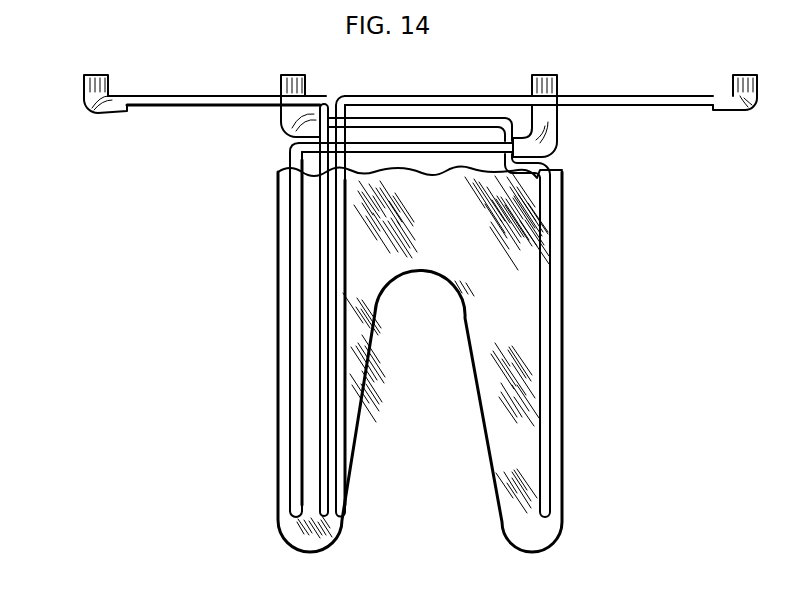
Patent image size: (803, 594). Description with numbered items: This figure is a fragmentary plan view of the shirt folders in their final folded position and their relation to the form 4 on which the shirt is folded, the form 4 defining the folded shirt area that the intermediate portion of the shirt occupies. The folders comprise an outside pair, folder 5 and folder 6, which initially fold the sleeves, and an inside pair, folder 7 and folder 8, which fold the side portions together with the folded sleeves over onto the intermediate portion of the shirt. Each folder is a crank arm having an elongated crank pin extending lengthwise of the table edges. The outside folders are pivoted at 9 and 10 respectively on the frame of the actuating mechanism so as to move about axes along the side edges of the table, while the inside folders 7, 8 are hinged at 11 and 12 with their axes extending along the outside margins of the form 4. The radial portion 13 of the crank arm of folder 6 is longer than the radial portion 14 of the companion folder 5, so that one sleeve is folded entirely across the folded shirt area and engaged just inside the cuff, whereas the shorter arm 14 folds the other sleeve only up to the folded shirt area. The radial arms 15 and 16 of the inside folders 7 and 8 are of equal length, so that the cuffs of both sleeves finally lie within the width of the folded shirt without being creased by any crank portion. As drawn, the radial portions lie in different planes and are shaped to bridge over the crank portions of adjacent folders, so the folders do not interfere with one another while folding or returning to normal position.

The form 4 is at (482, 350).
The outside folder 5 is at (322, 508).
The outside folder 6 is at (341, 458).
The inside folder 7 is at (545, 492).
The inside folder 8 is at (295, 465).
The pivot of outside folder 9 is at (92, 85).
The pivot of outside folder 10 is at (757, 90).
The pivot of inside folder 11 is at (300, 84).
The pivot of inside folder 12 is at (548, 82).
The radial portion 13 is at (632, 96).
The radial portion 14 is at (233, 96).
The radial arm 15 is at (472, 120).
The radial arm 16 is at (450, 146).